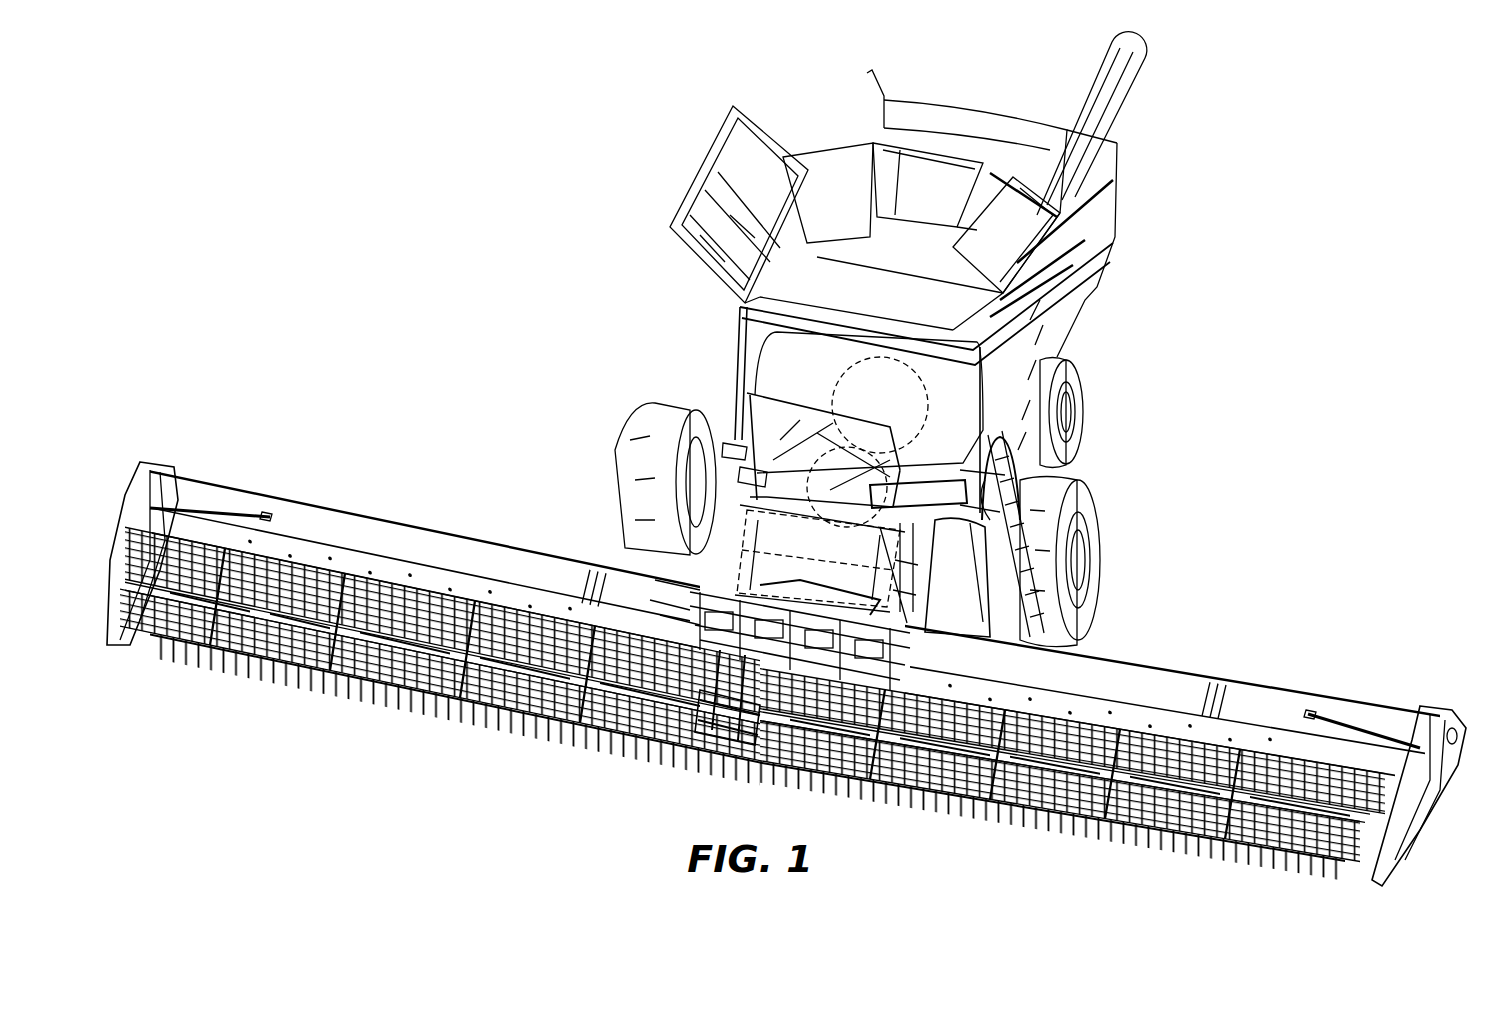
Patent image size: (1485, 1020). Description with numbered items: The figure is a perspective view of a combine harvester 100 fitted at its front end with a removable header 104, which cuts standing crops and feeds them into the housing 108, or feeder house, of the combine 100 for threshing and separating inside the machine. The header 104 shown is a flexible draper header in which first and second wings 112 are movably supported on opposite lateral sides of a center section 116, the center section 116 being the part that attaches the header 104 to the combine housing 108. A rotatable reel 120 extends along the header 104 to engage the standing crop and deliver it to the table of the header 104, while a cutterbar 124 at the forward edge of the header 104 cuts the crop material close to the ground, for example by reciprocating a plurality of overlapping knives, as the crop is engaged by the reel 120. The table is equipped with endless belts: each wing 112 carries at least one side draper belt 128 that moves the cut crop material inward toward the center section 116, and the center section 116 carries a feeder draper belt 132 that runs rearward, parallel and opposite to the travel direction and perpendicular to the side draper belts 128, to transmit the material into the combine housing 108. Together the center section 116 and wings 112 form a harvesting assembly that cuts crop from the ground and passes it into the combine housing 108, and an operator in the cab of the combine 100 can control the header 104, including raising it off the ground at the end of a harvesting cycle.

The combine harvester 100 is at (508, 220).
The header 104 is at (273, 448).
The housing 108 is at (755, 545).
The wings 112 is at (383, 537).
The center section 116 is at (665, 590).
The reel 120 is at (275, 665).
The cutterbar 124 is at (152, 650).
The side draper belt 128 is at (498, 700).
The feeder draper belt 132 is at (747, 743).